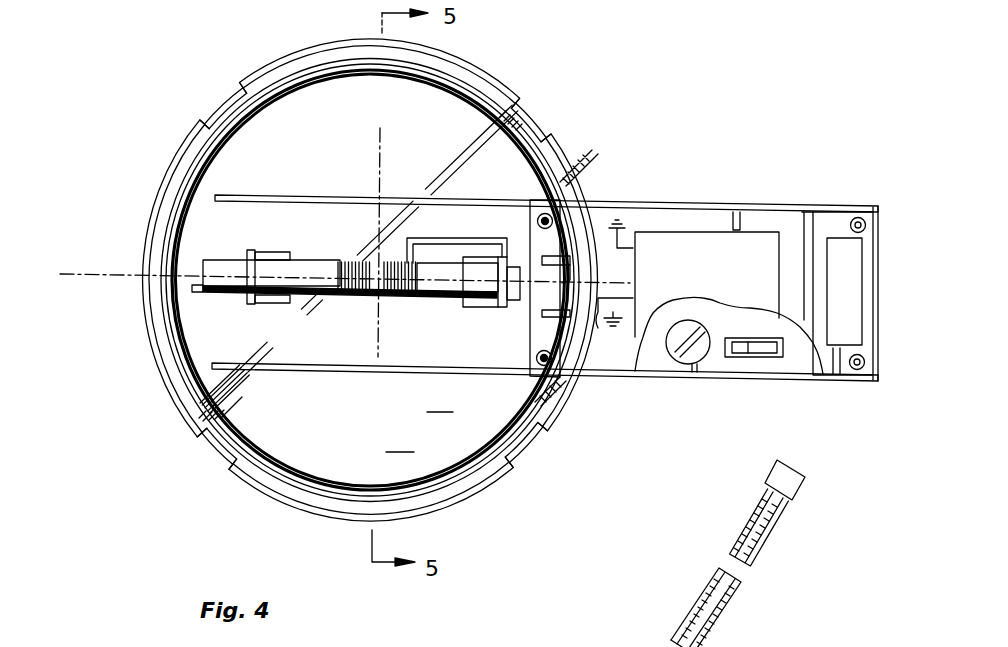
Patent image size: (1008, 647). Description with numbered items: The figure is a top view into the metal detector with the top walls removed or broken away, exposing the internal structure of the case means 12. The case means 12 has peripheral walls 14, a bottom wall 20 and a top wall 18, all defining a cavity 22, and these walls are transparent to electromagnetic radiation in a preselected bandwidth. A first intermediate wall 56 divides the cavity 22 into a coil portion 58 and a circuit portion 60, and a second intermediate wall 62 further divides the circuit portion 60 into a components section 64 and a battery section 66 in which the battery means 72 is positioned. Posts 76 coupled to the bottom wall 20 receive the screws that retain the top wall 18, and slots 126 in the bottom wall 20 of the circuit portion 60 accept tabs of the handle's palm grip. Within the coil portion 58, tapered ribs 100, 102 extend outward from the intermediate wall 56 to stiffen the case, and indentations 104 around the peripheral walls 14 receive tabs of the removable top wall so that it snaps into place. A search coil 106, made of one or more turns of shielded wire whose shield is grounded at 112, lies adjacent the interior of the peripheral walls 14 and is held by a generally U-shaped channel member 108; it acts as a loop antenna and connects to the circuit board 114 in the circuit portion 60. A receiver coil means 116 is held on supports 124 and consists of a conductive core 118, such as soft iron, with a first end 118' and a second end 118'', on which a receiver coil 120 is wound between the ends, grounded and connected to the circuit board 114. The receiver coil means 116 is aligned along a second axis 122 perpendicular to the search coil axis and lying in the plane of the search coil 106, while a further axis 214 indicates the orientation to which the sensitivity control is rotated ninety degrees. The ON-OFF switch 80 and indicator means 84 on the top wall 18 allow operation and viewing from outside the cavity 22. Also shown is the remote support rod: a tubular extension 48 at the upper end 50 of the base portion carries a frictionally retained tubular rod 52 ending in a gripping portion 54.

The case means 12 is at (500, 85).
The peripheral walls 14 is at (587, 160).
The top wall 18 is at (712, 369).
The bottom wall 20 is at (290, 72).
The cavity 22 is at (440, 400).
The tubular extension 48 is at (700, 640).
The upper end 50 is at (656, 646).
The tubular rod 52 is at (758, 562).
The gripping portion 54 is at (800, 482).
The first intermediate wall 56 is at (527, 222).
The coil portion 58 is at (400, 440).
The circuit portion 60 is at (693, 215).
The second intermediate wall 62 is at (808, 212).
The components section 64 is at (724, 212).
The battery section 66 is at (830, 218).
The battery means 72 is at (852, 272).
The posts 76 is at (543, 212).
The ON-OFF switch 80 is at (760, 358).
The indicator means 84 is at (670, 362).
The tapered rib 100 is at (352, 194).
The tapered rib 102 is at (332, 369).
The indentations 104 is at (227, 106).
The search coil 106 is at (283, 470).
The U-shaped channel member 108 is at (252, 437).
The shield ground 112 is at (612, 323).
The circuit board 114 is at (688, 270).
The receiver coil means 116 is at (312, 256).
The core 118 is at (343, 259).
The first end 118' is at (205, 310).
The second end 118'' is at (463, 256).
The receiver coil 120 is at (372, 262).
The second axis 122 is at (102, 272).
The supports 124 is at (257, 304).
The slots 126 is at (548, 286).
The axis 214 is at (382, 143).